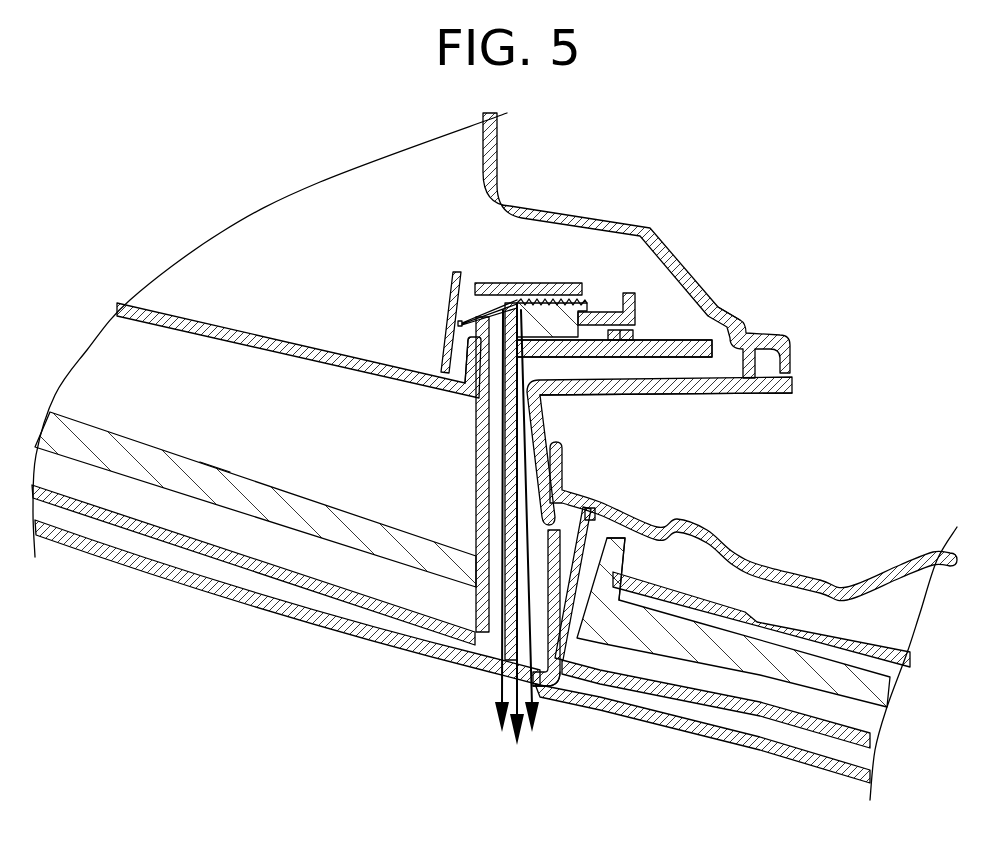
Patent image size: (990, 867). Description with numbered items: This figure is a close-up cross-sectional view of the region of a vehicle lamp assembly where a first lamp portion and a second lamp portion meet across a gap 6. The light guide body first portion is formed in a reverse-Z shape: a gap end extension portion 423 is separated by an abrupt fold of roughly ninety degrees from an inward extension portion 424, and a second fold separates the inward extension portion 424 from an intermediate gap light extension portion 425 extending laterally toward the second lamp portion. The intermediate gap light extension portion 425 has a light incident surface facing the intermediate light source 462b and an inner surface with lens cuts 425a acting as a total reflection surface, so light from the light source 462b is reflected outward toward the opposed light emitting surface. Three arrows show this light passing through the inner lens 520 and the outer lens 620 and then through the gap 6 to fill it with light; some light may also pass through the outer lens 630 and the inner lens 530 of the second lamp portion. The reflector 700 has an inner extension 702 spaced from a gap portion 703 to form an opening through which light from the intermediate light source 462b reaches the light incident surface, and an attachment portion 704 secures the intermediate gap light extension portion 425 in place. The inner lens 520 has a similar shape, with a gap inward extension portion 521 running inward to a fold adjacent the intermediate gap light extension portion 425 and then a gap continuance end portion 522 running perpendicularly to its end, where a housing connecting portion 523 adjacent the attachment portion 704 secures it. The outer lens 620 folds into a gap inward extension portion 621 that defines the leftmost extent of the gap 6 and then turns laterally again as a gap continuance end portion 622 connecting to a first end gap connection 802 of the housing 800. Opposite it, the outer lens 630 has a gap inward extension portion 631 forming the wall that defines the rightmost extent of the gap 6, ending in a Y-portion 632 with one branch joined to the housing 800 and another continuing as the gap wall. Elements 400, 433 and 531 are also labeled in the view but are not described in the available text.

The gap 6 is at (498, 672).
The display panel 400 is at (117, 443).
The gap end extension portion 423 is at (343, 517).
The inward extension portion 424 is at (476, 445).
The intermediate gap light extension portion 425 is at (558, 312).
The lens cuts 425a is at (523, 303).
The panel bent portion 433 is at (678, 623).
The intermediate light source 462b is at (450, 296).
The inner lens 520 is at (100, 515).
The gap inward extension portion 521 is at (510, 417).
The gap continuance end portion 522 is at (593, 352).
The housing connecting portion 523 is at (677, 340).
The inner lens 530 is at (722, 700).
The second frame wall 531 is at (575, 622).
The outer lens 620 is at (195, 590).
The gap inward extension portion 621 is at (538, 437).
The gap continuance end portion 622 is at (715, 388).
The outer lens 630 is at (827, 767).
The gap inward extension portion 631 is at (540, 663).
The Y-portion 632 is at (550, 553).
The reflector 700 is at (202, 327).
The inner extension 702 is at (443, 372).
The gap portion 703 is at (487, 282).
The attachment portion 704 is at (632, 292).
The housing 800 is at (678, 253).
The first end gap connection 802 is at (722, 315).